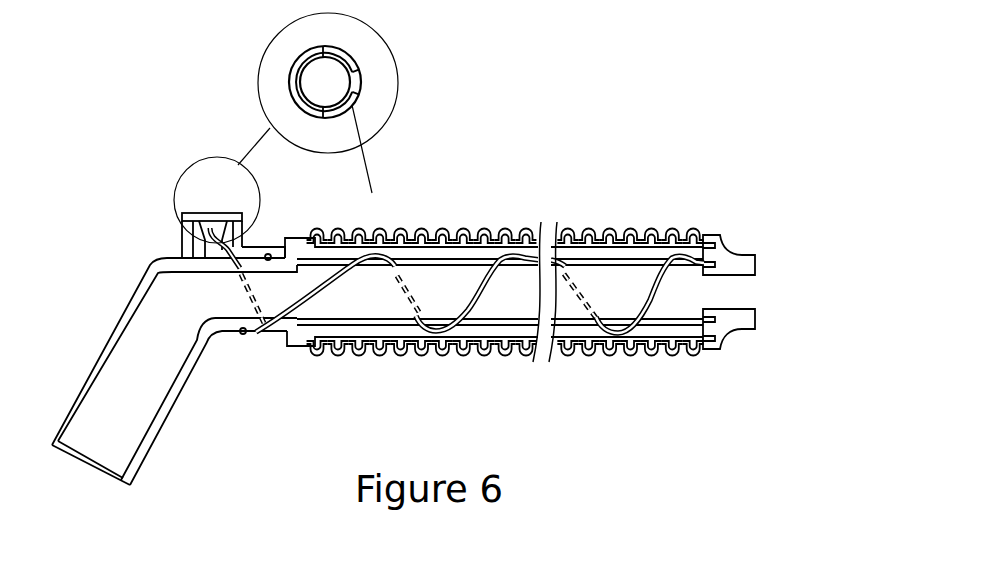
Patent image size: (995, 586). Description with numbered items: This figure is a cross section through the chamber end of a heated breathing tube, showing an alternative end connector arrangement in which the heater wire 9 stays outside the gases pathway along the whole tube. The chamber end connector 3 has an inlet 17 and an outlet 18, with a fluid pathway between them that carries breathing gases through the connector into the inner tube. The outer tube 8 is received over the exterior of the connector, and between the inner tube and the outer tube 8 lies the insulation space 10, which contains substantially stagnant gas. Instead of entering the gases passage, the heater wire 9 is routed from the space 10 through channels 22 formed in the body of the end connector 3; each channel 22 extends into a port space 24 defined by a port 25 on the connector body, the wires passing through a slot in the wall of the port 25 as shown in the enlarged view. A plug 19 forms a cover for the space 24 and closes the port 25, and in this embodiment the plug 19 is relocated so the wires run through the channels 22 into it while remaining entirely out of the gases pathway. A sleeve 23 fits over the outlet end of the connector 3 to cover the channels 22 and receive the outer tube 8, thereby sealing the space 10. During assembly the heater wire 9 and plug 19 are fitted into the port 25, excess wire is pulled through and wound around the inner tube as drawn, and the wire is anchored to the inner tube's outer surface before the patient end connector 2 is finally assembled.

The end connector 2 is at (727, 253).
The chamber end connector 3 is at (152, 270).
The outer tube 8 is at (420, 358).
The heater wire 9 is at (648, 303).
The space 10 is at (640, 253).
The inlet 17 is at (128, 485).
The outlet 18 is at (282, 297).
The plug 19 is at (200, 213).
The channel 22 is at (280, 312).
The sleeve 23 is at (290, 238).
The port space 24 is at (203, 253).
The port 25 is at (190, 248).